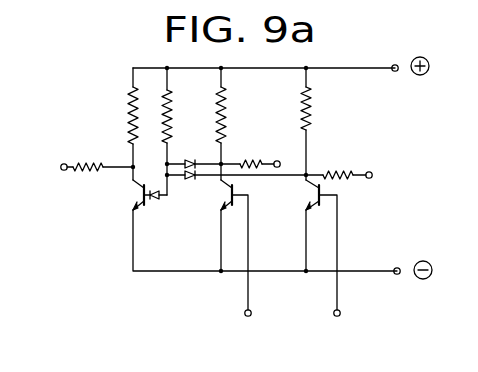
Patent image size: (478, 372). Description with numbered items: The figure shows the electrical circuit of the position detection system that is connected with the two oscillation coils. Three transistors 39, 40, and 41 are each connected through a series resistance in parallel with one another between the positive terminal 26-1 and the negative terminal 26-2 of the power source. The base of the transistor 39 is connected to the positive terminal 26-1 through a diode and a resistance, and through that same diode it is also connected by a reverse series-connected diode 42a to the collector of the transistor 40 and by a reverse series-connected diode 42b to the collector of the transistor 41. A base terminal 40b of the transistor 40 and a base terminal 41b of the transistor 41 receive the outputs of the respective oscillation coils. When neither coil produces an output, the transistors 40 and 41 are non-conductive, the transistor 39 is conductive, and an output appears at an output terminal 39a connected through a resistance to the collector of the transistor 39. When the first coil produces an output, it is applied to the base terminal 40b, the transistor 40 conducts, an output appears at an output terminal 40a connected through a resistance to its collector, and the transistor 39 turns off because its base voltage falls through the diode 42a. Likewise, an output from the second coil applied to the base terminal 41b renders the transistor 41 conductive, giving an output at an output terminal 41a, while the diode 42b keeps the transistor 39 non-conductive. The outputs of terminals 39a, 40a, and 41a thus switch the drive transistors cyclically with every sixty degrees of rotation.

The positive terminal 26-1 is at (396, 64).
The negative terminal 26-2 is at (397, 267).
The transistor 39 is at (134, 191).
The output terminal 39a is at (62, 171).
The transistor 40 is at (223, 192).
The output terminal 40a is at (277, 160).
The base terminal 40b is at (252, 317).
The transistor 41 is at (309, 195).
The output terminal 41a is at (369, 171).
The base terminal 41b is at (340, 317).
The diode 42a is at (190, 160).
The diode 42b is at (187, 182).